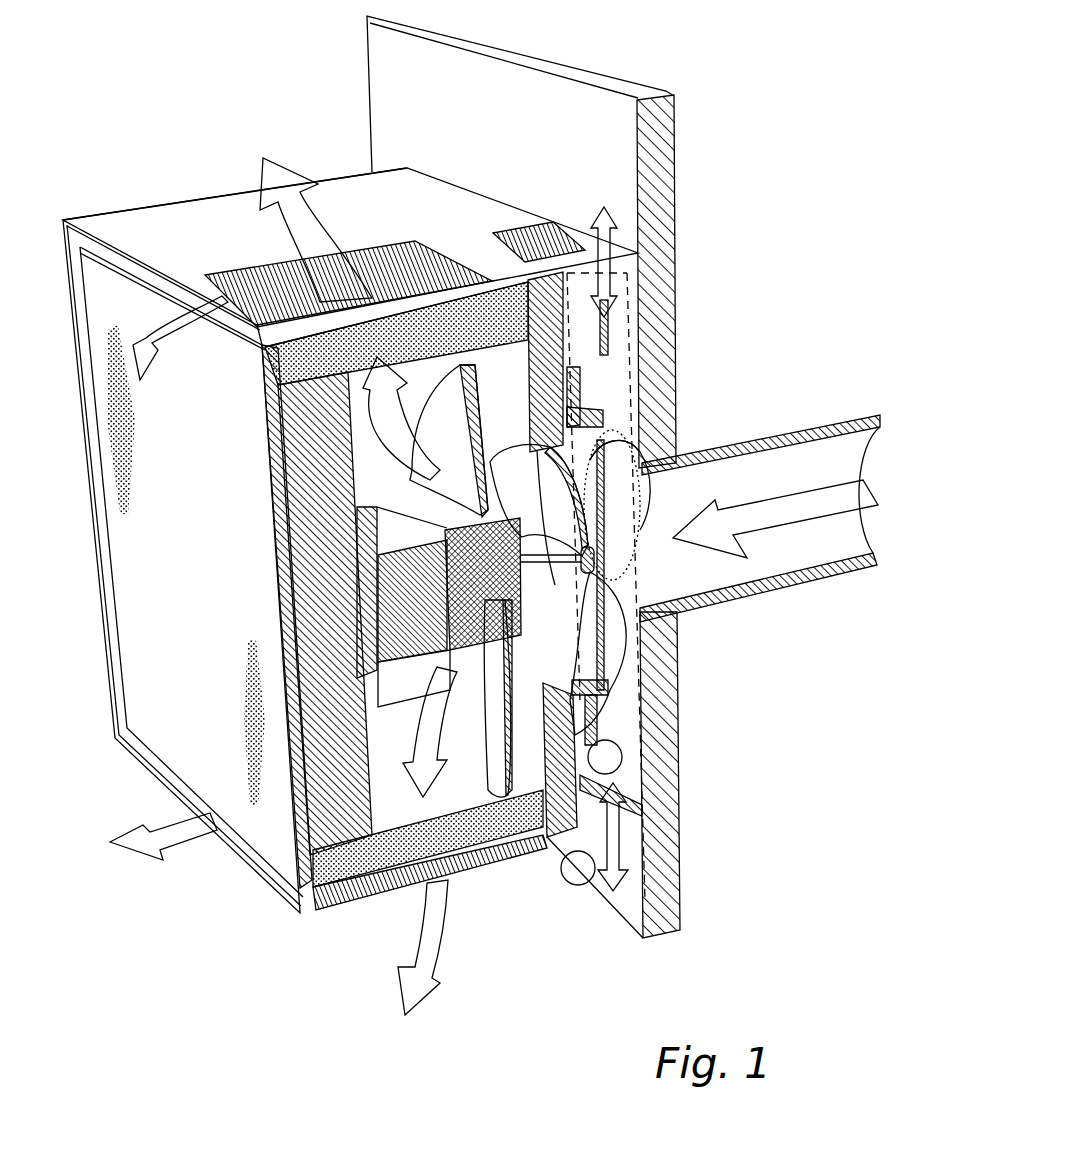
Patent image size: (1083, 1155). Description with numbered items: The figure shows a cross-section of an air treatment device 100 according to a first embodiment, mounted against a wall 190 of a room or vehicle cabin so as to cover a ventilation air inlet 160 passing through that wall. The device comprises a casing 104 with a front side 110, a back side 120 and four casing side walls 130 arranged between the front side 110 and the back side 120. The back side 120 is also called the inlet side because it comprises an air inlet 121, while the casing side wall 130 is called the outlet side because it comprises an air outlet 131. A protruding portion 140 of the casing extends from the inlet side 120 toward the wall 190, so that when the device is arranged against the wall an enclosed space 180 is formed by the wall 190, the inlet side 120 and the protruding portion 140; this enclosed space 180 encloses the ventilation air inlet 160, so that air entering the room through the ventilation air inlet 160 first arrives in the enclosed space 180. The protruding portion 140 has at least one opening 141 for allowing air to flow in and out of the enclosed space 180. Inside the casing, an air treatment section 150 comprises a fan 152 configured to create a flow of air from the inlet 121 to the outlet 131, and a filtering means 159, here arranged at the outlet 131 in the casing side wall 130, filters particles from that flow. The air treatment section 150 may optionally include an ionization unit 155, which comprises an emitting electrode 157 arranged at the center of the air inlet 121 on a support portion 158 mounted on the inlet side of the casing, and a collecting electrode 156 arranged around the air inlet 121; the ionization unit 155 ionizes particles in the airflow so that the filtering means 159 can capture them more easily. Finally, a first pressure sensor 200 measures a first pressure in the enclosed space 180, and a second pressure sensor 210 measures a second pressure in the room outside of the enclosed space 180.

The air treatment device 100 is at (233, 206).
The casing 104 is at (190, 198).
The front side 110 is at (195, 733).
The back side 120 is at (627, 248).
The air inlet 121 is at (612, 335).
The casing side wall 130 is at (150, 222).
The air outlet 131 is at (392, 242).
The protruding portion 140 is at (480, 203).
The opening 141 is at (560, 232).
The air treatment section 150 is at (395, 650).
The fan 152 is at (393, 712).
The ionization unit 155 is at (600, 382).
The collecting electrode 156 is at (620, 440).
The emitting electrode 157 is at (597, 548).
The support portion 158 is at (655, 688).
The filtering means 159 is at (470, 822).
The ventilation air inlet 160 is at (700, 600).
The enclosed space 180 is at (657, 716).
The wall 190 is at (660, 125).
The first pressure sensor 200 is at (622, 760).
The second pressure sensor 210 is at (583, 885).